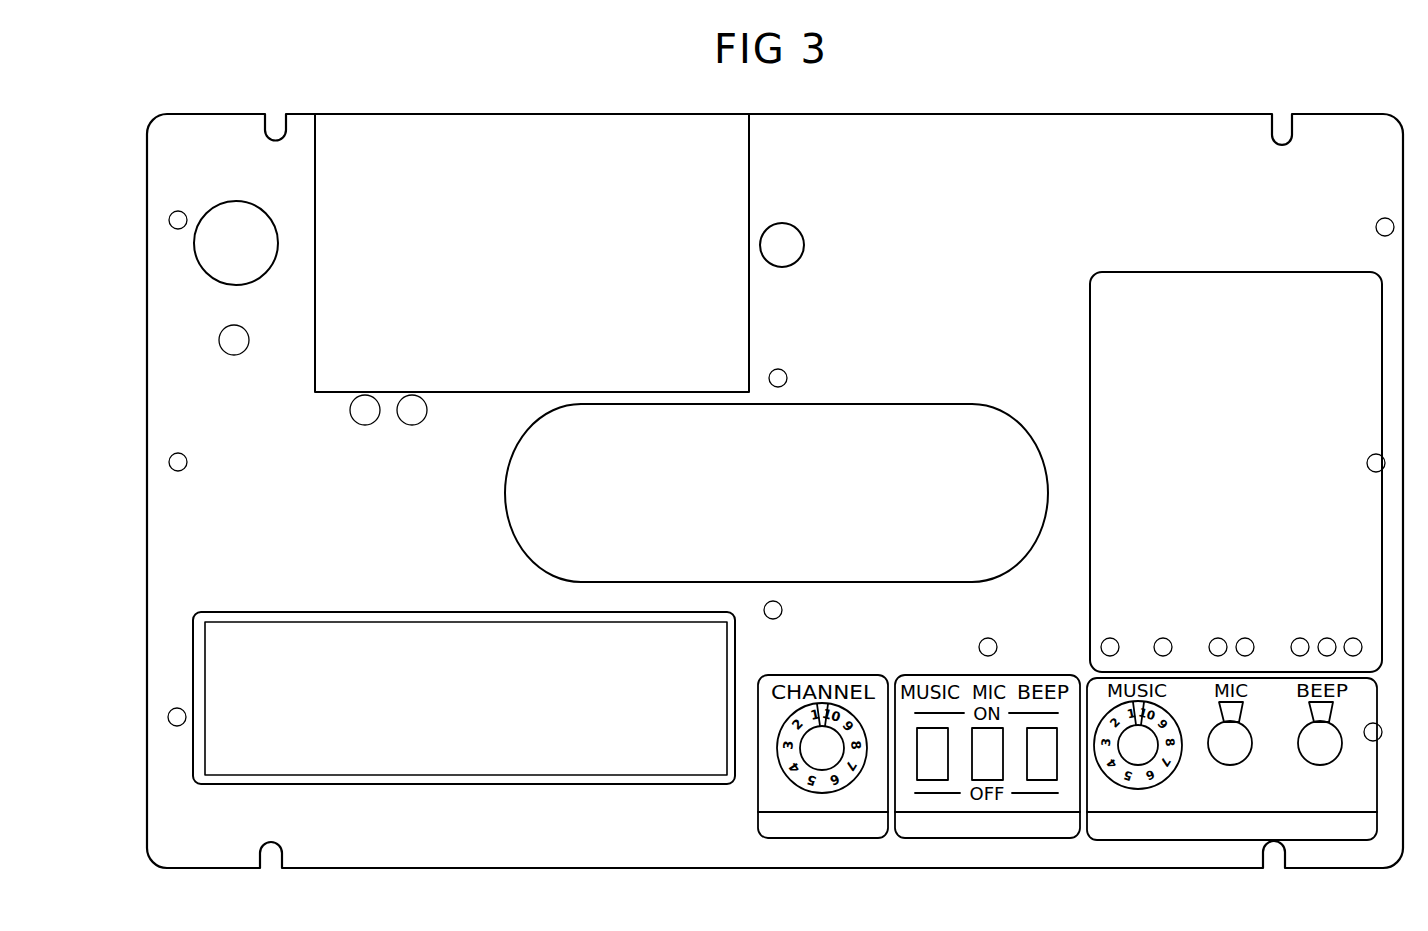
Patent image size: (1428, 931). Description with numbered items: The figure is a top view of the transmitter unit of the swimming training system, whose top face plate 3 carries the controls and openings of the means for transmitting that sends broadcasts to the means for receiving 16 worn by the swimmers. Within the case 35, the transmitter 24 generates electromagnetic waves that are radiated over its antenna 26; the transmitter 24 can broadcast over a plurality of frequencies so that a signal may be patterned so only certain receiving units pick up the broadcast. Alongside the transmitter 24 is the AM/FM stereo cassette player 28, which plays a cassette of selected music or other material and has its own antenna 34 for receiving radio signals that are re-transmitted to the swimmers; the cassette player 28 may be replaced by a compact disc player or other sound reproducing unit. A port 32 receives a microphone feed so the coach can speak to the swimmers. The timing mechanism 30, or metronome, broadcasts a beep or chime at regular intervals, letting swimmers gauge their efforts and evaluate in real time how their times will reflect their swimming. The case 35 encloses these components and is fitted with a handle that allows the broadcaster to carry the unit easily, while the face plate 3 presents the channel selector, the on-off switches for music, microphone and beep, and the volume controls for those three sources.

The control panel face plate 3 is at (739, 491).
The means for receiving 16 is at (148, 657).
The transmitter 24 is at (540, 251).
The antenna 26 is at (798, 246).
The AM/FM stereo cassette player 28 is at (446, 713).
The timing mechanism 30 is at (1244, 498).
The port 32 is at (207, 249).
The antenna 34 is at (222, 337).
The case 35 is at (507, 526).